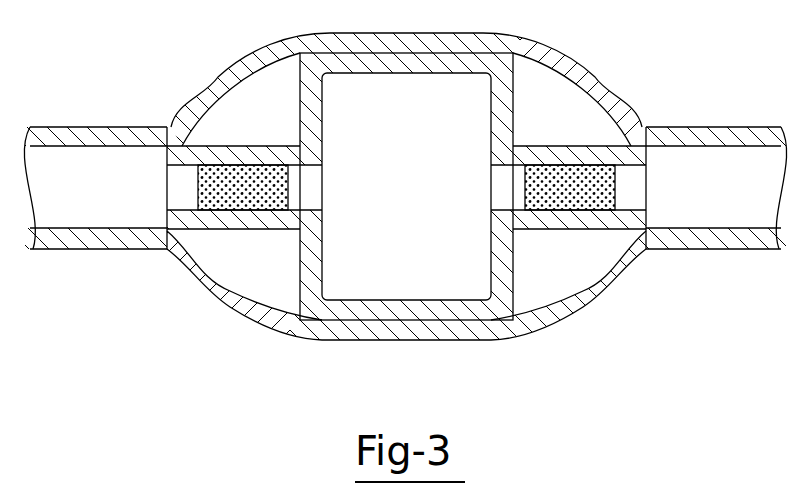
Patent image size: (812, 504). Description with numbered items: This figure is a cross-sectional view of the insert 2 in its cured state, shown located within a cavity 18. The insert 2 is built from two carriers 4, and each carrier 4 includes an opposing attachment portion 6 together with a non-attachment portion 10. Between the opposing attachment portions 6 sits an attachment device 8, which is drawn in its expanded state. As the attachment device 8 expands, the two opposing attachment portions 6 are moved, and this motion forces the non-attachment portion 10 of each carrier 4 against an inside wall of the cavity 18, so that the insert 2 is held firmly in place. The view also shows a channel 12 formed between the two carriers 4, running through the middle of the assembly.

The insert 2 is at (567, 108).
The carrier 4 is at (645, 157).
The opposing attachment portion 6 is at (250, 163).
The attachment device 8 is at (207, 192).
The non-attachment portion 10 is at (395, 319).
The channel 12 is at (406, 186).
The cavity 18 is at (210, 93).